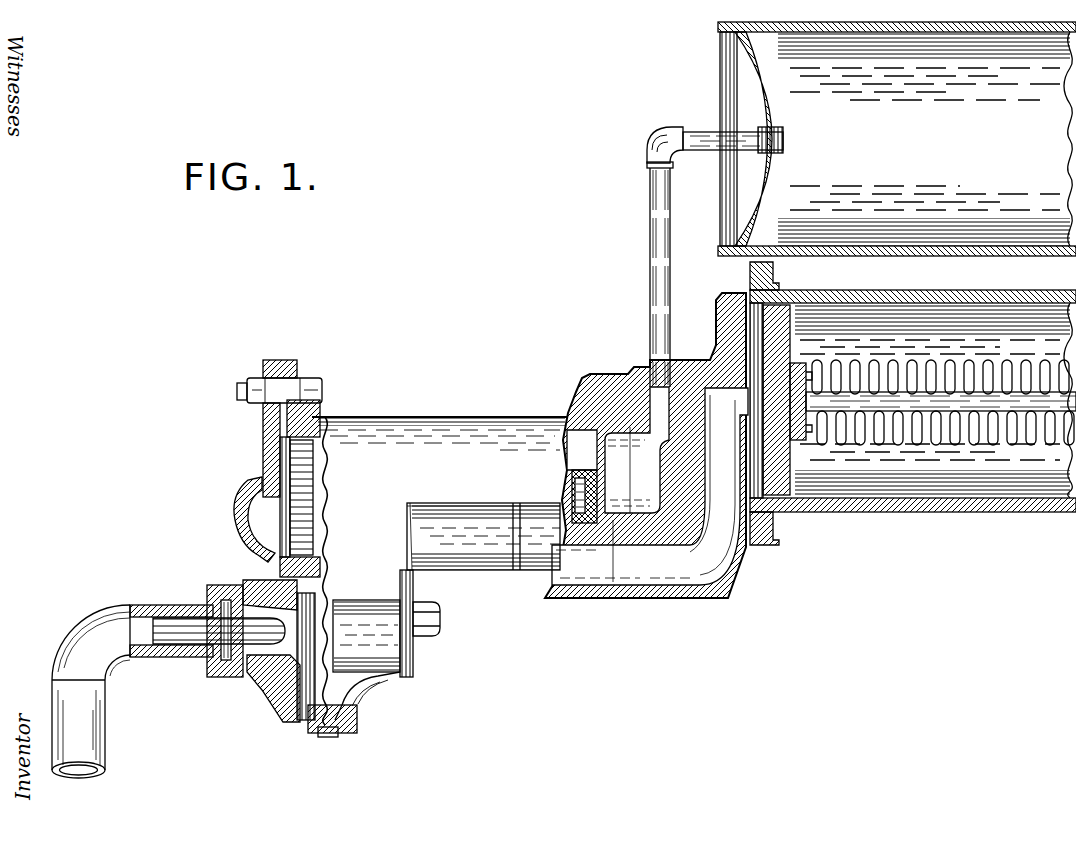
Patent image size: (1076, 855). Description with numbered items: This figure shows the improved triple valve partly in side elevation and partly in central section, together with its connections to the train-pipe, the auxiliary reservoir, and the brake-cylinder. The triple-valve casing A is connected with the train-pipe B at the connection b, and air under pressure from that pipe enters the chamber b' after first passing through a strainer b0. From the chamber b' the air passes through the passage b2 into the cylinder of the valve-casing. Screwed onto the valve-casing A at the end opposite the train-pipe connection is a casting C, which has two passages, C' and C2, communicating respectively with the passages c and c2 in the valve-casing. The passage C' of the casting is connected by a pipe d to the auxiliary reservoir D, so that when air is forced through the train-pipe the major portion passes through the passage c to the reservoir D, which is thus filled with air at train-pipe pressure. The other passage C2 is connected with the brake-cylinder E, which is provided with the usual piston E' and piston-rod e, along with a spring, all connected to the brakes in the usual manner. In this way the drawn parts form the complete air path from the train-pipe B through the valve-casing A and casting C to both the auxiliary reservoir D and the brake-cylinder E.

The triple-valve casing A is at (445, 412).
The train-pipe B is at (104, 708).
The train-pipe connection b is at (186, 619).
The chamber b' is at (228, 634).
The passage b2 is at (250, 562).
The strainer b0 is at (270, 668).
The casting C is at (653, 449).
The passage C' is at (637, 450).
The passage C2 is at (650, 486).
The passage c is at (582, 476).
The passage c2 is at (623, 564).
The auxiliary reservoir D is at (735, 58).
The pipe d is at (655, 243).
The brake-cylinder E is at (913, 422).
The piston E' is at (784, 434).
The piston-rod e is at (1006, 438).